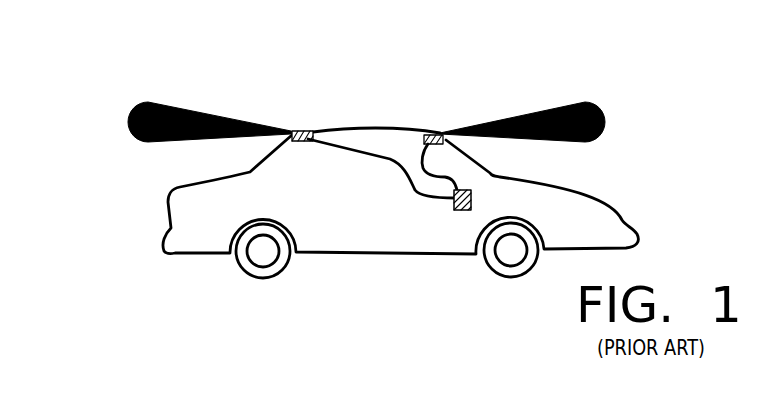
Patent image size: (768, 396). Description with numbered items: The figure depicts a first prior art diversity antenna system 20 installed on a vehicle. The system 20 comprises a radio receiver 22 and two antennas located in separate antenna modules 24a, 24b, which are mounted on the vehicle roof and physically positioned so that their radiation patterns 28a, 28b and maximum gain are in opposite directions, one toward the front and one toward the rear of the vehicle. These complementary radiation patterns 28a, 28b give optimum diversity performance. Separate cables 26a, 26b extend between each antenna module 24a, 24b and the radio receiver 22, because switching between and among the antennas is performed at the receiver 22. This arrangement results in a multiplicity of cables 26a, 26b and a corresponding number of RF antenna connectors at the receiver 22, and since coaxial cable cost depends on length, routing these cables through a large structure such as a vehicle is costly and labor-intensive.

The prior art diversity system 20 is at (369, 77).
The radio receiver 22 is at (461, 212).
The antenna module 24a is at (440, 132).
The antenna module 24b is at (290, 130).
The cable 26a is at (432, 175).
The cable 26b is at (358, 152).
The radiation pattern 28a is at (628, 68).
The radiation pattern 28b is at (143, 102).